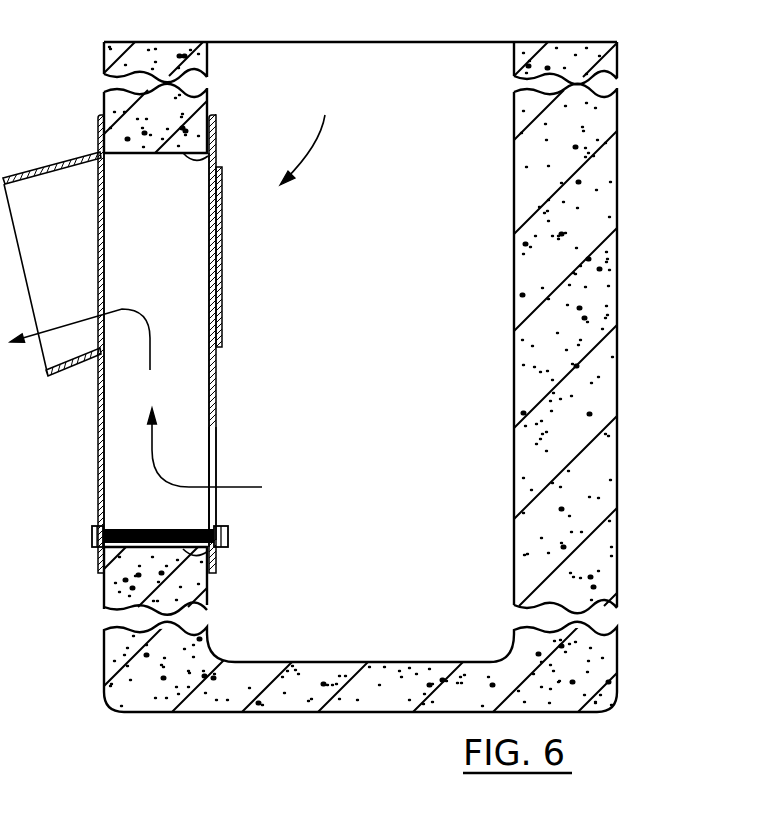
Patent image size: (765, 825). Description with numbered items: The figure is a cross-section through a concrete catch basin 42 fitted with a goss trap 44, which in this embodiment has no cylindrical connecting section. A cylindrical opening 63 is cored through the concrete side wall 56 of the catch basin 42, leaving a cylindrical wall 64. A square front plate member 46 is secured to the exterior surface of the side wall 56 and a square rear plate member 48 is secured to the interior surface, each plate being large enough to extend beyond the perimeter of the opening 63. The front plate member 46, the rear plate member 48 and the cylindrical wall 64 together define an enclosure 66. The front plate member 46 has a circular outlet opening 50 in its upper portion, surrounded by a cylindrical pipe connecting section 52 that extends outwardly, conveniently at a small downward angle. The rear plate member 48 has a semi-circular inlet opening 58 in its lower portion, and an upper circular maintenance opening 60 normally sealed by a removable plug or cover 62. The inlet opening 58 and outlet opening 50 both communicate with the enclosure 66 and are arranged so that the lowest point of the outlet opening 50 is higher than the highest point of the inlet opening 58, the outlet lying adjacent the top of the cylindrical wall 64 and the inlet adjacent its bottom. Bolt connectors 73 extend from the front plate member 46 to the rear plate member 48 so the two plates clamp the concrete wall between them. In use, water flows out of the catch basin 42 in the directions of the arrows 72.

The catch basin 42 is at (576, 42).
The goss trap 44 is at (310, 131).
The front plate member 46 is at (98, 467).
The rear plate member 48 is at (216, 380).
The outlet opening 50 is at (104, 216).
The pipe connecting section 52 is at (47, 163).
The side wall 56 is at (192, 100).
The inlet opening 58 is at (216, 452).
The maintenance opening 60 is at (209, 218).
The plug or cover 62 is at (222, 258).
The cylindrical opening 63 is at (130, 395).
The wall of cylindrical opening 64 is at (210, 157).
The enclosure 66 is at (195, 285).
The arrows 72 is at (150, 342).
The bolt connectors 73 is at (150, 529).